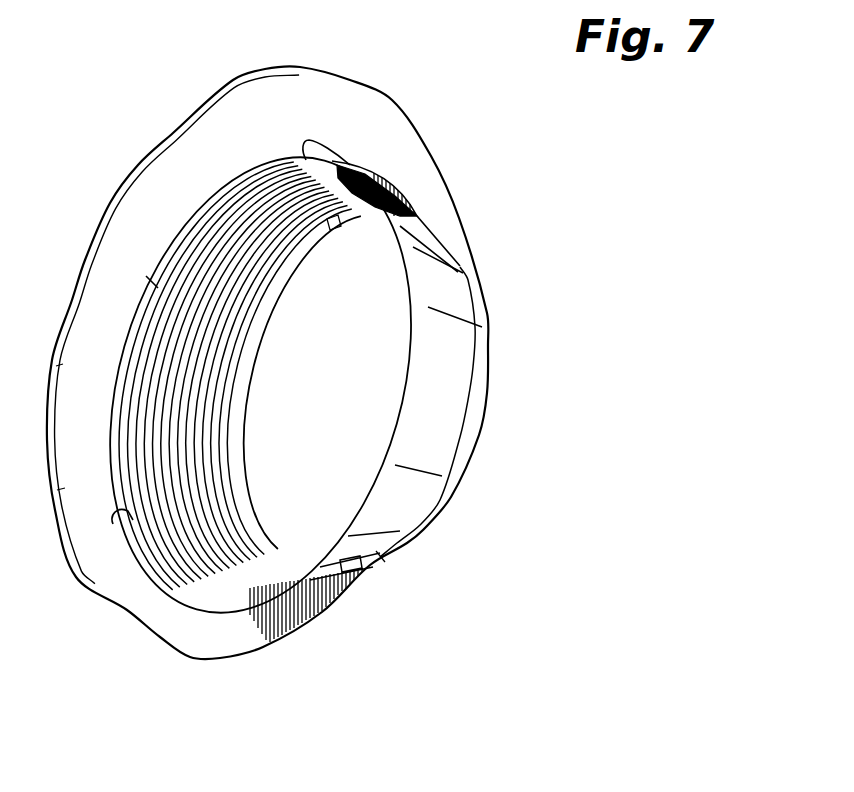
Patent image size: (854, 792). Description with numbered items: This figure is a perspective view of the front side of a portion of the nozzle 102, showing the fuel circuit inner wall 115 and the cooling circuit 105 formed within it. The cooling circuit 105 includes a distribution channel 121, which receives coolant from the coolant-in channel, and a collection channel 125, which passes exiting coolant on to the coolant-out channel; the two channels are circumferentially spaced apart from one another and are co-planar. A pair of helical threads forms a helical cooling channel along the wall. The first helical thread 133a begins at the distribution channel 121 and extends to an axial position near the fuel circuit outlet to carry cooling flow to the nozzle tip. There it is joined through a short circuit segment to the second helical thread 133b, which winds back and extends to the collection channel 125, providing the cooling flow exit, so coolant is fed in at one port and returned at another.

The threaded ring / lens mount adapter 102 is at (592, 244).
The cooling circuit 105 is at (293, 193).
The fuel circuit inner wall 115 is at (165, 134).
The distribution channel 121 is at (200, 597).
The collection channel 125 is at (323, 147).
The first helical thread 133a is at (125, 522).
The second helical thread 133b is at (153, 283).